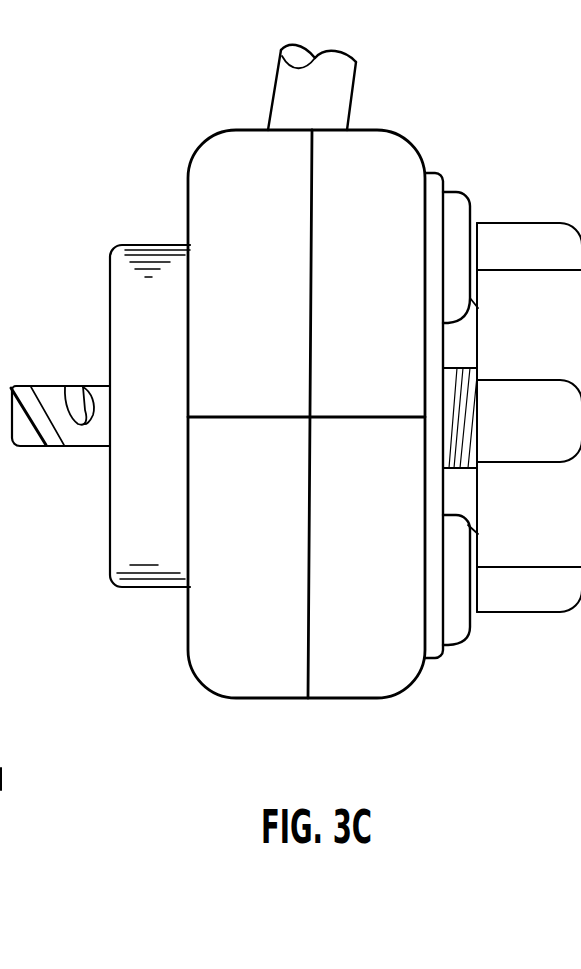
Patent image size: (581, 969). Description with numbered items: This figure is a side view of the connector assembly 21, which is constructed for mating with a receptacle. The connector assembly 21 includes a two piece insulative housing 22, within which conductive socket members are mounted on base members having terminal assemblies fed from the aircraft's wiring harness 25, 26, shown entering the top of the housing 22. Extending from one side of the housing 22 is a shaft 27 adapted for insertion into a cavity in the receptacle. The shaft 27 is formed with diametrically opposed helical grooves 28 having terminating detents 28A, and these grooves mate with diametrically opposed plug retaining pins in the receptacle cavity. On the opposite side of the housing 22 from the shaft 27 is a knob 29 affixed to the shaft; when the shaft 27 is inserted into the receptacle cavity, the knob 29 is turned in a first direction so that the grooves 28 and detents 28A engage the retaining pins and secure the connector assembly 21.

The connector assembly 21 is at (204, 704).
The insulative housing 22 is at (345, 703).
The wiring harness 25 is at (251, 87).
The wiring harness 26 is at (286, 89).
The shaft 27 is at (58, 422).
The helical grooves 28 is at (23, 395).
The terminating detents 28A is at (82, 425).
The knob 29 is at (520, 597).